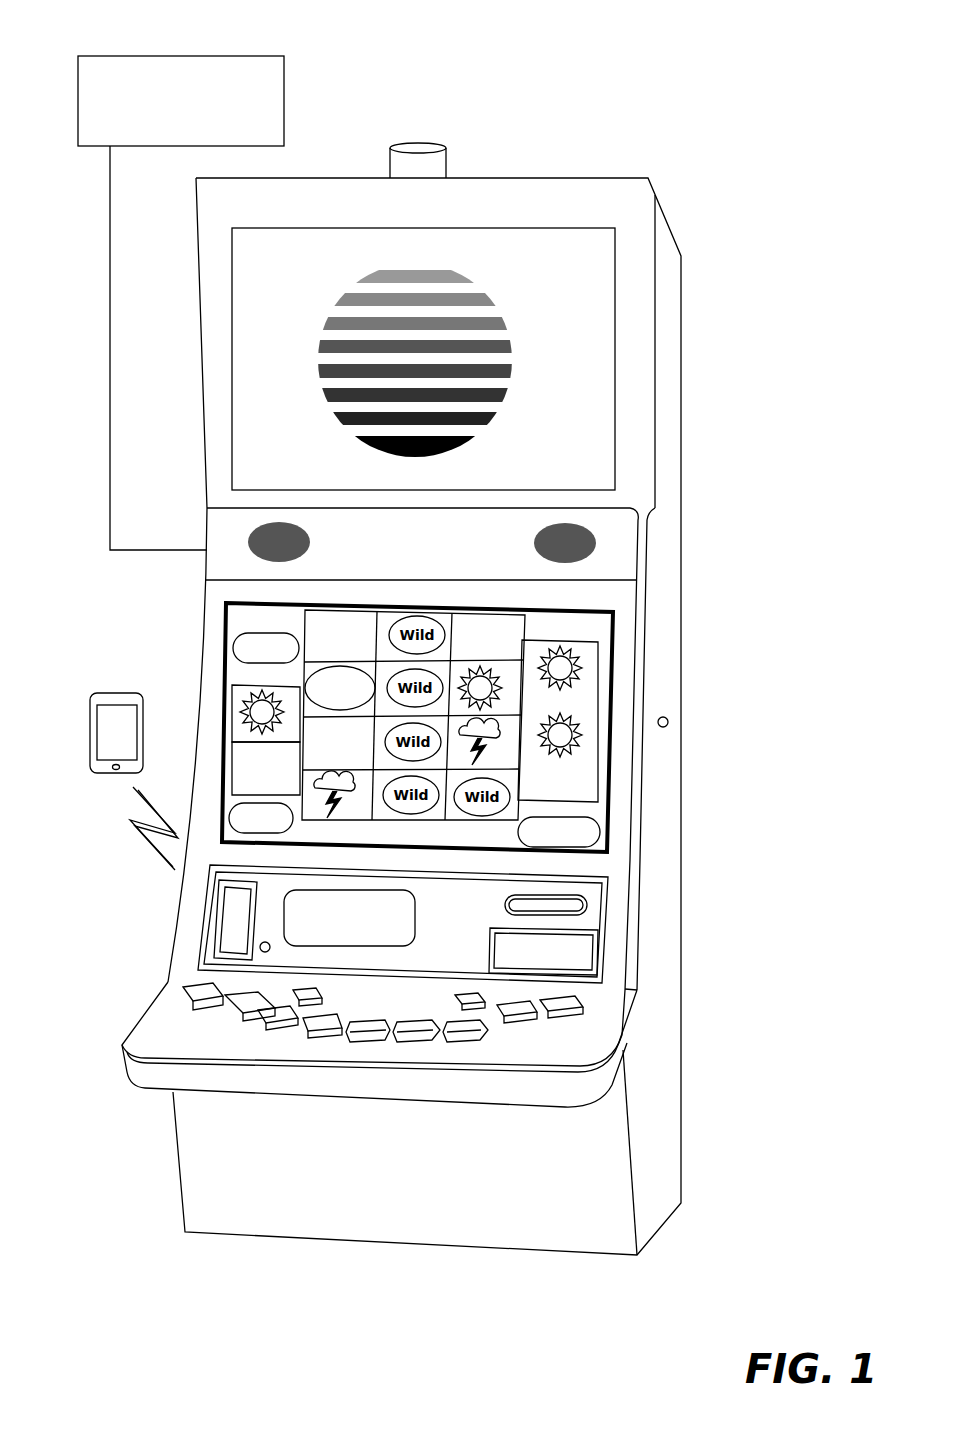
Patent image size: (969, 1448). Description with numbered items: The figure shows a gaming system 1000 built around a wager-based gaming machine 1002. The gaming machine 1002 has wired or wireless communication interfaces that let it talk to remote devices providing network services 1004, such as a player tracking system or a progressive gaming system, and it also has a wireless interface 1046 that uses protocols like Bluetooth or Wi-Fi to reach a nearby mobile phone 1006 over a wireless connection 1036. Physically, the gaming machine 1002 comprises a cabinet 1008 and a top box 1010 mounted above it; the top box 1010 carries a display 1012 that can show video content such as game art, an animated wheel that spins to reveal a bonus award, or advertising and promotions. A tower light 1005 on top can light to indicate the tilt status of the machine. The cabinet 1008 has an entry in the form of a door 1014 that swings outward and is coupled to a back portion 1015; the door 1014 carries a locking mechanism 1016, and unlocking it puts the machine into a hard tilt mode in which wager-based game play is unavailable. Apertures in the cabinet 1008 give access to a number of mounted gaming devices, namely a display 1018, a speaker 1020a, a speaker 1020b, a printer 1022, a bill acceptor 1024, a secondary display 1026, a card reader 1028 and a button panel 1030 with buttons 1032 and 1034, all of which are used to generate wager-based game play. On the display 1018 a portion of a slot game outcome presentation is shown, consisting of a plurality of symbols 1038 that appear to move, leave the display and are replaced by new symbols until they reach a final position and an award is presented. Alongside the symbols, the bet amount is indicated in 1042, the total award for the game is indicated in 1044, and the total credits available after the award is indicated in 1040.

The gaming system 1000 is at (118, 30).
The wager-based gaming machine 1002 is at (372, 152).
The network services 1004 is at (273, 139).
The tower light 1005 is at (440, 164).
The mobile phone 1006 is at (108, 720).
The cabinet 1008 is at (438, 569).
The top box 1010 is at (635, 218).
The display 1012 is at (593, 477).
The door 1014 is at (652, 550).
The back portion 1015 is at (665, 590).
The locking mechanism 1016 is at (668, 720).
The display 1018 is at (613, 690).
The speaker 1020a is at (250, 542).
The speaker 1020b is at (588, 530).
The printer 1022 is at (585, 904).
The bill acceptor 1024 is at (563, 960).
The secondary display 1026 is at (395, 936).
The card reader 1028 is at (233, 917).
The button panel 1030 is at (201, 1047).
The button 1032 is at (583, 1003).
The button 1034 is at (463, 1027).
The wireless connection 1036 is at (140, 821).
The symbols 1038 is at (372, 674).
The total credits indicator 1040 is at (600, 826).
The bet amount indicator 1042 is at (231, 644).
The total award indicator 1044 is at (228, 805).
The wireless interface 1046 is at (260, 950).